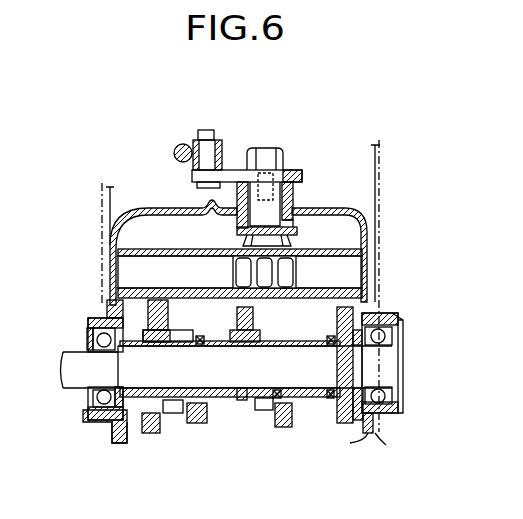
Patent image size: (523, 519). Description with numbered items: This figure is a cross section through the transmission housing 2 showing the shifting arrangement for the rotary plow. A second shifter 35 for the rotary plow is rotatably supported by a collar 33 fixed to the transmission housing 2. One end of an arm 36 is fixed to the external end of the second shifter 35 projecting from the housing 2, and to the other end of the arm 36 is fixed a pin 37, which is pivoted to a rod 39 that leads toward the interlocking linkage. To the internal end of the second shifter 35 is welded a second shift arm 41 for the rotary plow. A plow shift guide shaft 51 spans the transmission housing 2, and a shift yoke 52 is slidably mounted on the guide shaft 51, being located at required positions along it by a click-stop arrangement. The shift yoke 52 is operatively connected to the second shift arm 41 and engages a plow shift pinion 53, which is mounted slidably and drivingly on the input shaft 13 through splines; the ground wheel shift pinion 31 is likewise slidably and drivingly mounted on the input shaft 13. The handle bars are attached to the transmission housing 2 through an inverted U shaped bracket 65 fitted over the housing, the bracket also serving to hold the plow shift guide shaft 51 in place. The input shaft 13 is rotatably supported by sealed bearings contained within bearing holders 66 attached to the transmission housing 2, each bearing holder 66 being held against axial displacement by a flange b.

The transmission housing 2 is at (138, 212).
The input shaft 13 is at (78, 382).
The ground wheel shift pinion 31 is at (257, 404).
The collar 33 is at (292, 198).
The second shifter 35 is at (277, 187).
The arm 36 is at (238, 172).
The pin 37 is at (216, 170).
The rod 39 is at (177, 147).
The second shift arm 41 is at (300, 237).
The plow shift guide shaft 51 is at (350, 267).
The shift yoke 52 is at (172, 256).
The plow shift pinion 53 is at (174, 410).
The inverted U shaped bracket 65 is at (101, 192).
The bearing holder 66 is at (86, 322).
The flange b is at (120, 418).